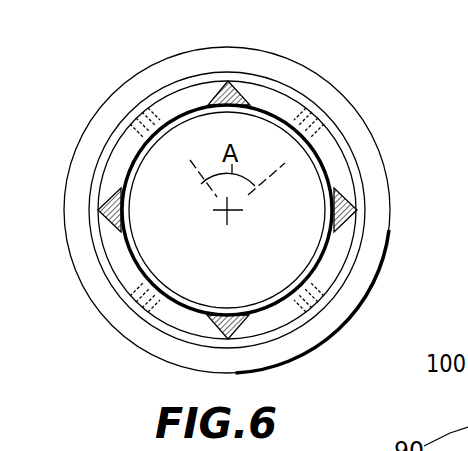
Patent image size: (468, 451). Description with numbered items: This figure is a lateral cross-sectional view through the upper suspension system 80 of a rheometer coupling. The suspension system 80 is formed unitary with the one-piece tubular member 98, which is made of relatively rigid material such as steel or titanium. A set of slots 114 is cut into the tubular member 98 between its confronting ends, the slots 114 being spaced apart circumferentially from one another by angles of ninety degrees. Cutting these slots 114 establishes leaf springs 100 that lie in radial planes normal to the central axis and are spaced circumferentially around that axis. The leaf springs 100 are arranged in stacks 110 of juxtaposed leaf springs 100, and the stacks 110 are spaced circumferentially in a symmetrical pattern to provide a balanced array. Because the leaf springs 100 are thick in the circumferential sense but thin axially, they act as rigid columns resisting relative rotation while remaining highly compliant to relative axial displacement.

The upper suspension system 80 is at (356, 172).
The tubular member 98 is at (378, 127).
The leaf springs 100 is at (163, 102).
The stacks 110 is at (188, 76).
The slots 114 is at (140, 117).